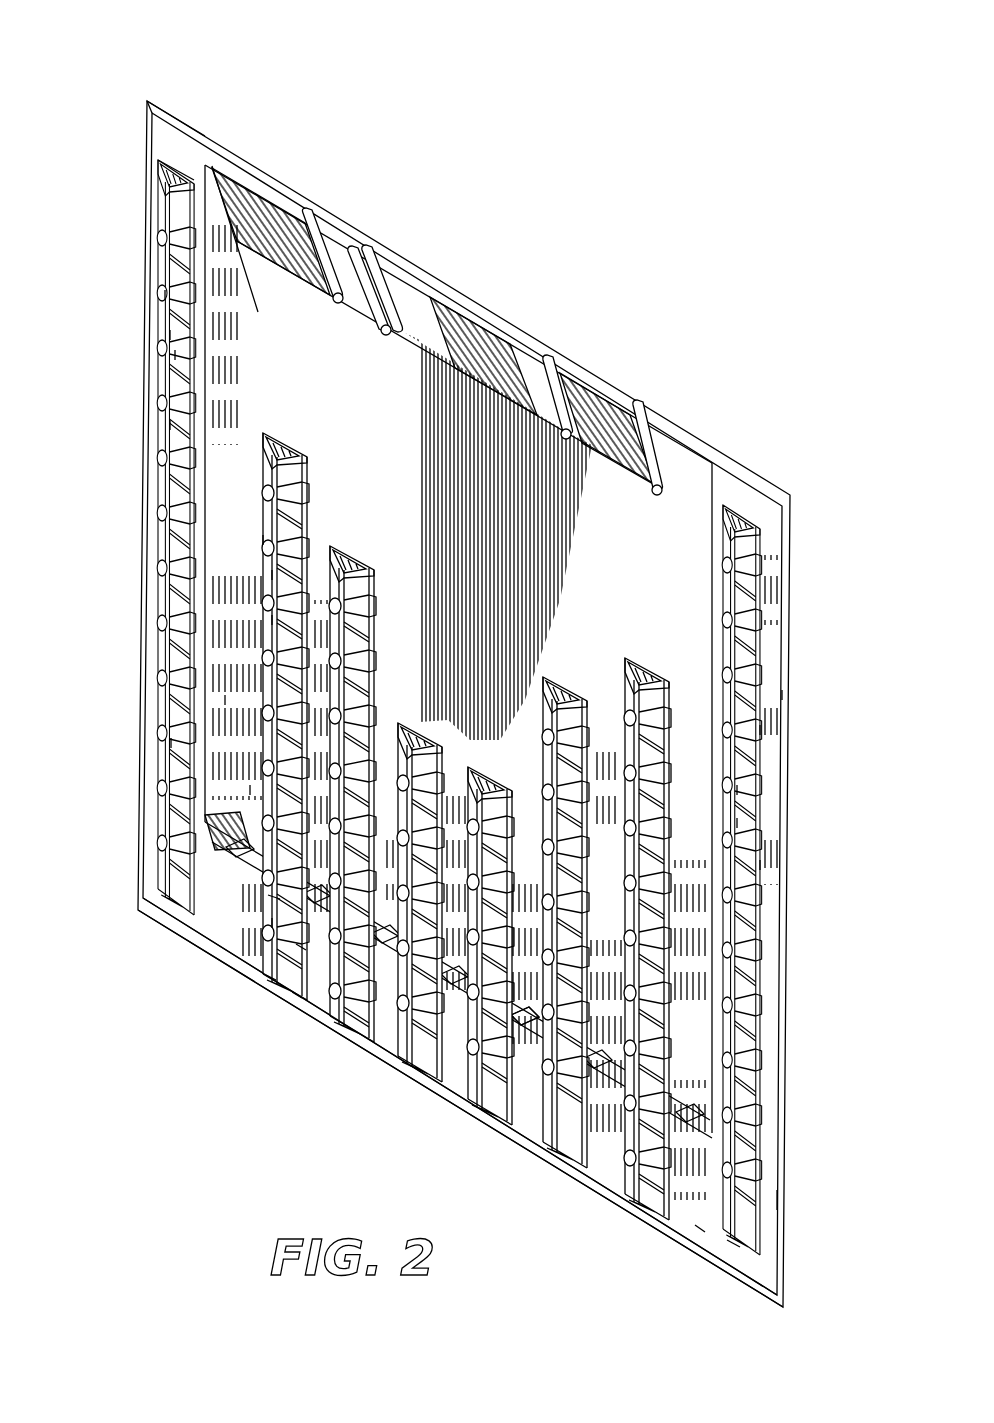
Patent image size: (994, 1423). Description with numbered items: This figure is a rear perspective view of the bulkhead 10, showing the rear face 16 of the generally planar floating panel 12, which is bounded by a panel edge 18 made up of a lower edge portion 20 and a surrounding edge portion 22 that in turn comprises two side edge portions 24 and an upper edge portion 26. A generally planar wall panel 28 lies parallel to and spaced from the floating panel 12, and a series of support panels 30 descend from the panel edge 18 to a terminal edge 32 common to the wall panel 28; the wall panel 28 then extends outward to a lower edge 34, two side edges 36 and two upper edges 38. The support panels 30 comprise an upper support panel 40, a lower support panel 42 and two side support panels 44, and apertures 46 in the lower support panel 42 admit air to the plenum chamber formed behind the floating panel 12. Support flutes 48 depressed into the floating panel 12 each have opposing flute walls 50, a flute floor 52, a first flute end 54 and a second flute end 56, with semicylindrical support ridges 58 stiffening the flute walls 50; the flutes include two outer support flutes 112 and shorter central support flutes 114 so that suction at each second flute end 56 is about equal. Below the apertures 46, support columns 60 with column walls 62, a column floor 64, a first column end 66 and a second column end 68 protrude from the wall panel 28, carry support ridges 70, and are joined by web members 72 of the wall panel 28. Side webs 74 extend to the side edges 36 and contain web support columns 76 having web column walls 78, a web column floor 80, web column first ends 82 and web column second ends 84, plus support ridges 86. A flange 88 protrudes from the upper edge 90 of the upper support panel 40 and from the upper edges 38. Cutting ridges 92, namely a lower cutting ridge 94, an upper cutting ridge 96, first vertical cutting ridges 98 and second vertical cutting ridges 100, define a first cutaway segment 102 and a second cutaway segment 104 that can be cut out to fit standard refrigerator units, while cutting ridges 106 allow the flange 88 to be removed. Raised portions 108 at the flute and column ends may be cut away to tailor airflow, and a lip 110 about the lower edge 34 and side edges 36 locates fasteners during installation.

The bulkhead 10 is at (146, 68).
The floating panel 12 is at (486, 562).
The rear face 16 is at (172, 252).
The panel edge 18 is at (205, 292).
The lower edge portion 20 is at (790, 1052).
The surrounding edge portion 22 is at (256, 312).
The side edge portions 24 is at (214, 356).
The upper edge portion 26 is at (200, 420).
The wall panel 28 is at (690, 1170).
The support panels 30 is at (204, 455).
The terminal edge 32 is at (248, 185).
The lower edge 34 is at (700, 1230).
The side edges 36 is at (768, 1198).
The upper edges 38 is at (168, 140).
The upper support panel 40 is at (513, 367).
The lower support panel 42 is at (625, 1160).
The side support panels 44 is at (173, 742).
The apertures 46 is at (560, 1150).
The support flutes 48 is at (275, 500).
The flute walls 50 is at (268, 540).
The flute floor 52 is at (280, 575).
The first flute end 54 is at (255, 790).
The second flute end 56 is at (275, 620).
The support ridges 58 is at (232, 700).
The support columns 60 is at (275, 897).
The column walls 62 is at (280, 922).
The column floor 64 is at (300, 948).
The first column end 66 is at (270, 980).
The second column end 68 is at (340, 1030).
The support ridges 70 is at (295, 997).
The web members 72 is at (405, 1040).
The side webs 74 is at (782, 695).
The web support columns 76 is at (760, 730).
The web column walls 78 is at (747, 792).
The web column floor 80 is at (747, 820).
The web column first ends 82 is at (728, 1245).
The web column second ends 84 is at (730, 505).
The support ridges 86 is at (763, 865).
The flange 88 is at (257, 182).
The upper edge 90 is at (275, 183).
The cutting ridges 92 is at (337, 222).
The lower cutting ridge 94 is at (377, 240).
The upper cutting ridge 96 is at (407, 265).
The first vertical cutting ridges 98 is at (372, 325).
The second vertical cutting ridges 100 is at (338, 303).
The first cutaway segment 102 is at (479, 356).
The second cutaway segment 104 is at (440, 430).
The cutting ridges 106 is at (207, 147).
The raised portions 108 is at (648, 655).
The lip 110 is at (675, 1240).
The outer support flutes 112 is at (645, 662).
The central support flutes 114 is at (483, 768).